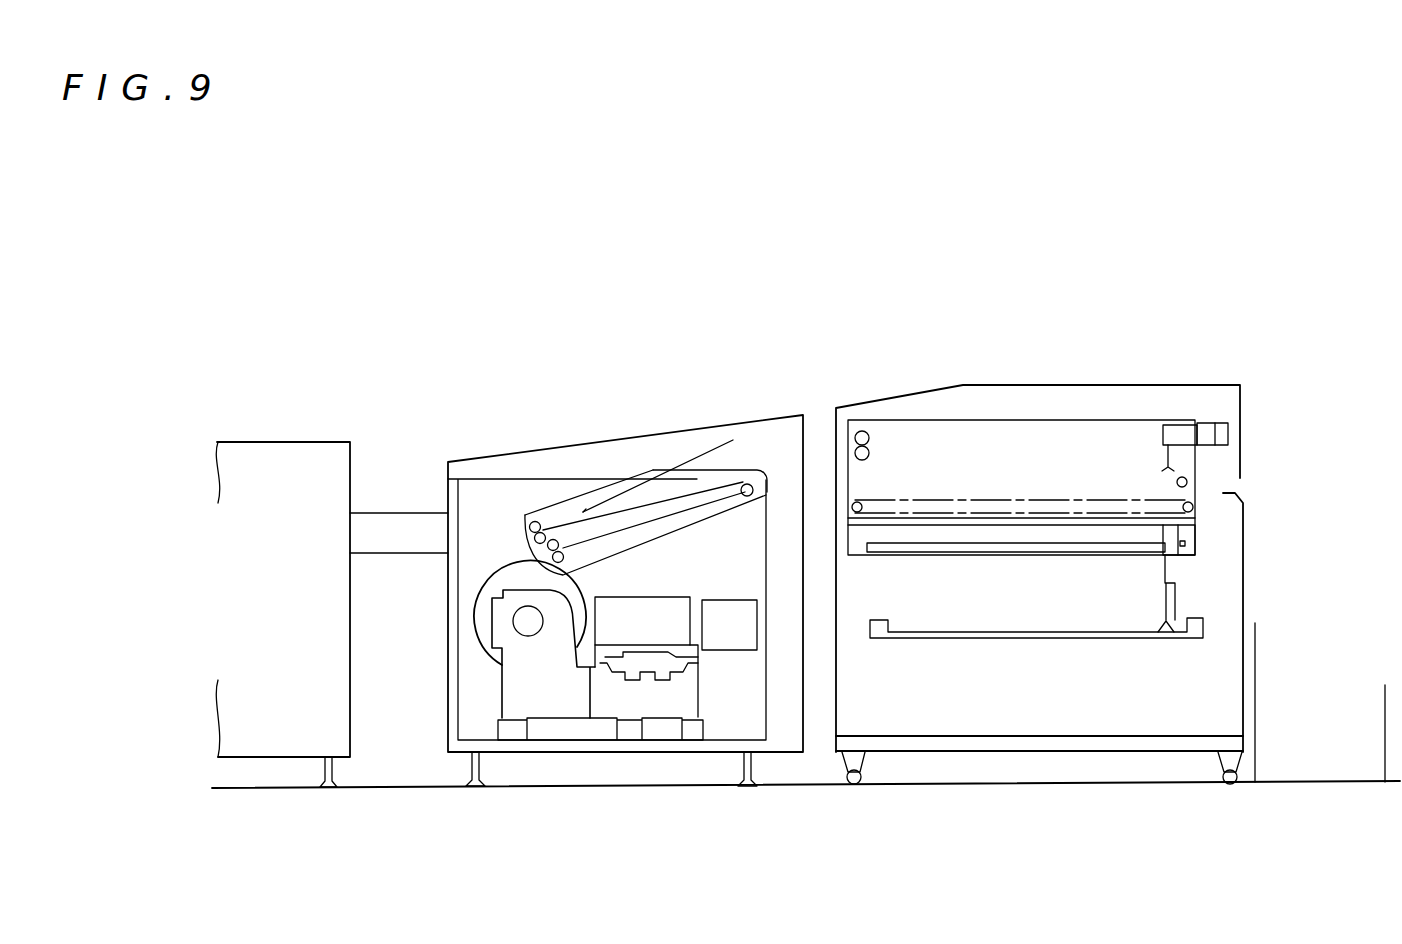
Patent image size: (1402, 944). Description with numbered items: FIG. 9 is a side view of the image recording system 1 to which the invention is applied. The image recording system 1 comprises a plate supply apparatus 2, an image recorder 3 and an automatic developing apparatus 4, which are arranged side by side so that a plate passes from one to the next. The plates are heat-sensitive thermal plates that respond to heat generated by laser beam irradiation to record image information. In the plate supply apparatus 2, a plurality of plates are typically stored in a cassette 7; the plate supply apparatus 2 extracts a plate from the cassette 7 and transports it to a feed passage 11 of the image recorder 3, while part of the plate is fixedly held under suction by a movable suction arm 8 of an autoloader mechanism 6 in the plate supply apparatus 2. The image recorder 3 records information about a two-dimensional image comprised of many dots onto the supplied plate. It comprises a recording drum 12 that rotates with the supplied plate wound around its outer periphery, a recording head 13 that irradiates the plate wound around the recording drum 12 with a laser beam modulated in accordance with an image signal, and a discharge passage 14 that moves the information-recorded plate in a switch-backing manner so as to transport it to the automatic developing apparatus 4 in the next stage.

The image recording system 1 is at (424, 265).
The plate supply apparatus 2 is at (1066, 363).
The image recorder 3 is at (645, 405).
The automatic developing apparatus 4 is at (286, 419).
The autoloader mechanism 6 is at (1225, 542).
The cassette 7 is at (1060, 640).
The movable suction arm 8 is at (1187, 612).
The feed passage 11 is at (728, 472).
The recording drum 12 is at (477, 622).
The recording head 13 is at (635, 603).
The discharge passage 14 is at (583, 512).